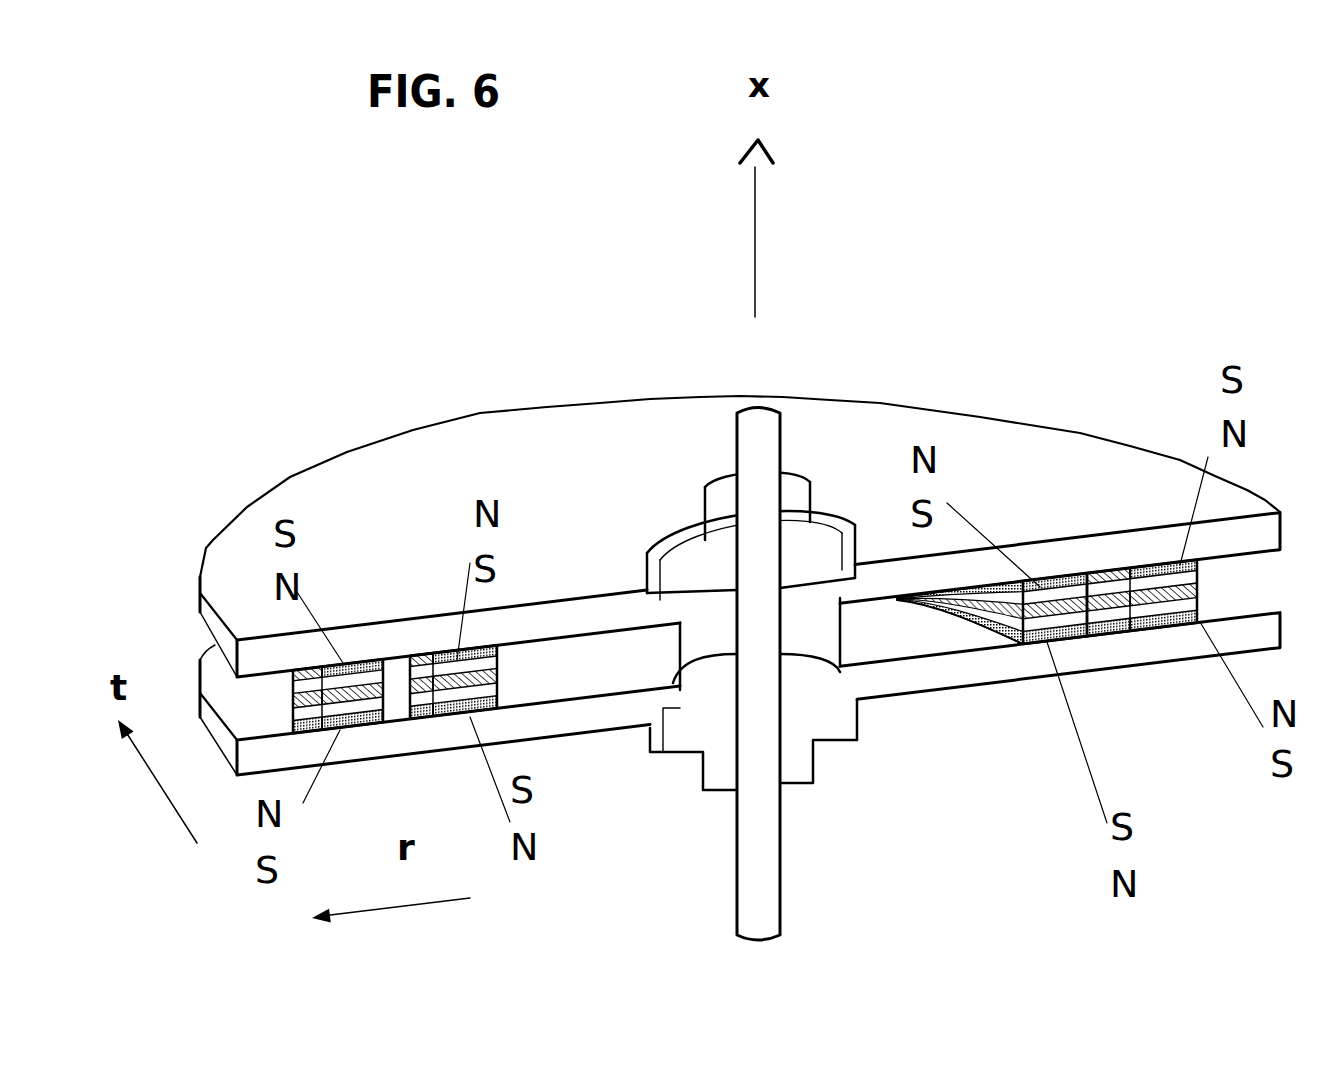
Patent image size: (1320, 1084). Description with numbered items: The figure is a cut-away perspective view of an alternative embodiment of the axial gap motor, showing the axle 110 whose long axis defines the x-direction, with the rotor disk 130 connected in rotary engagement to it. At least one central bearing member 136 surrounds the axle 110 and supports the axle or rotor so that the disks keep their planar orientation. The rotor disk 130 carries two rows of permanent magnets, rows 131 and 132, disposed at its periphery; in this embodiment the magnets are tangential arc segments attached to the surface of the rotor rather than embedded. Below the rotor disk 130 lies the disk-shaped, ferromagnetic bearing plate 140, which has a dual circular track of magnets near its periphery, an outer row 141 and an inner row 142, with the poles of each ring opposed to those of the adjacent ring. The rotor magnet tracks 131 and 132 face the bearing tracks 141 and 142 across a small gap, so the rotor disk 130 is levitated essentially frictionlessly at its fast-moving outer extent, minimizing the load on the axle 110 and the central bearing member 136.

The axle 110 is at (705, 478).
The rotor disk 130 is at (365, 445).
The row of permanent magnets 131 is at (1003, 543).
The row of permanent magnets 132 is at (1175, 562).
The central bearing member 136 is at (735, 425).
The bearing plate 140 is at (977, 697).
The outer row of magnets 141 is at (1040, 640).
The inner row of magnets 142 is at (1170, 645).